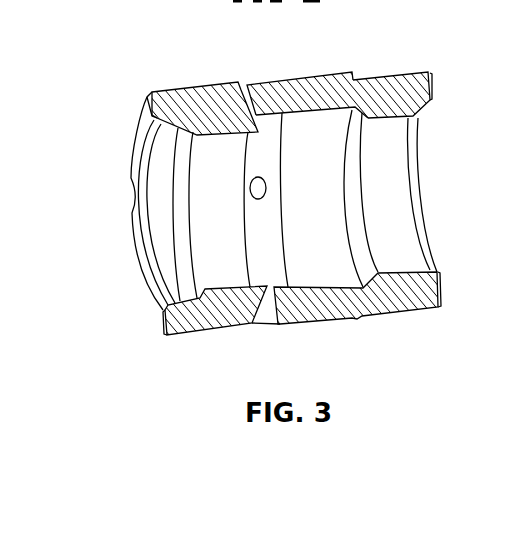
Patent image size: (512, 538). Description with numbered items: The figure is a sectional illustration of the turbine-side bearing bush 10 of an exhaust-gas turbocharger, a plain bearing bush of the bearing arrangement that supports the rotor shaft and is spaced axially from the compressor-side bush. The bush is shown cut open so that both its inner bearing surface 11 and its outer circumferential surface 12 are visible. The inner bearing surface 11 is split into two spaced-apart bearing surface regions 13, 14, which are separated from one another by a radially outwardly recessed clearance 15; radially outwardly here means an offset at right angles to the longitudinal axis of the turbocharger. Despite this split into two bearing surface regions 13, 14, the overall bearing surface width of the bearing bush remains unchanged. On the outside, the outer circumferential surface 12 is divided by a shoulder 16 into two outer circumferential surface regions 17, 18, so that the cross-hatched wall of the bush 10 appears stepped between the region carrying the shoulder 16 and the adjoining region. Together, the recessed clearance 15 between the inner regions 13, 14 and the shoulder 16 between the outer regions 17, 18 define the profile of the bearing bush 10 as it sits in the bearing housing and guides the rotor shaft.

The turbine-side bearing bush 10 is at (256, 218).
The inner bearing surface 11 is at (226, 203).
The outer circumferential surface 12 is at (357, 320).
The bearing surface region 13 is at (220, 132).
The bearing surface region 14 is at (392, 118).
The radially outwardly recessed clearance 15 is at (312, 117).
The shoulder 16 is at (357, 73).
The outer circumferential surface region 17 is at (177, 85).
The outer circumferential surface region 18 is at (412, 71).